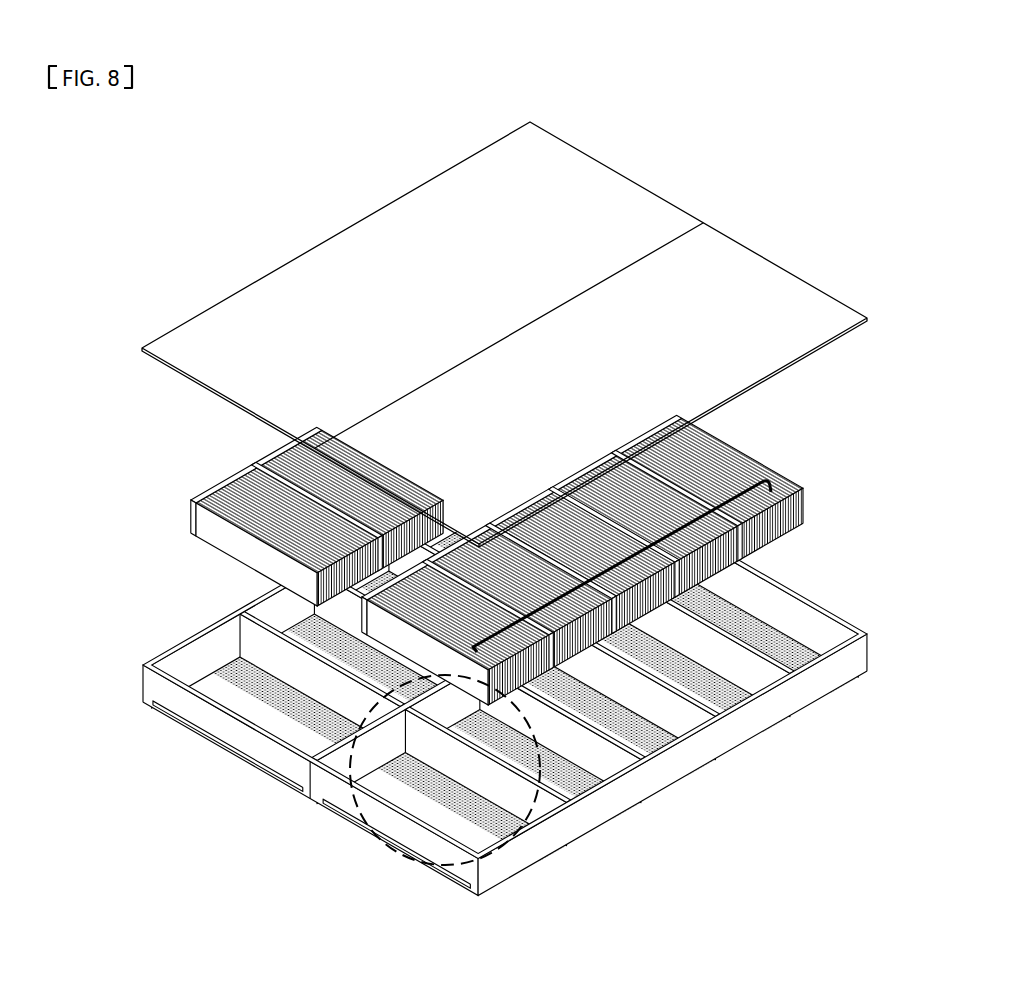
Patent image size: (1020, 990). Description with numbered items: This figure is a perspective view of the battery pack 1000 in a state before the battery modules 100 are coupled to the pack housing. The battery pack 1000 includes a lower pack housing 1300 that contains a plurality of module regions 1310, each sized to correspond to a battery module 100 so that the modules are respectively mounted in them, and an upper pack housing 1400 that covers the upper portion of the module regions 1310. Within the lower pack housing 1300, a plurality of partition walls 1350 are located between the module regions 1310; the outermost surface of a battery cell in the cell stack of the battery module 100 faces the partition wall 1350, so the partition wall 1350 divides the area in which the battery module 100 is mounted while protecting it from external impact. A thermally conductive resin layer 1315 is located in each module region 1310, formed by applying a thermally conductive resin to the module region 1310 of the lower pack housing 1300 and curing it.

The battery pack 1000 is at (507, 534).
The battery module 100 is at (653, 573).
The lower pack housing 1300 is at (505, 694).
The module region 1310 is at (423, 852).
The thermally conductive resin layer 1315 is at (600, 763).
The partition wall 1350 is at (600, 790).
The upper pack housing 1400 is at (653, 220).